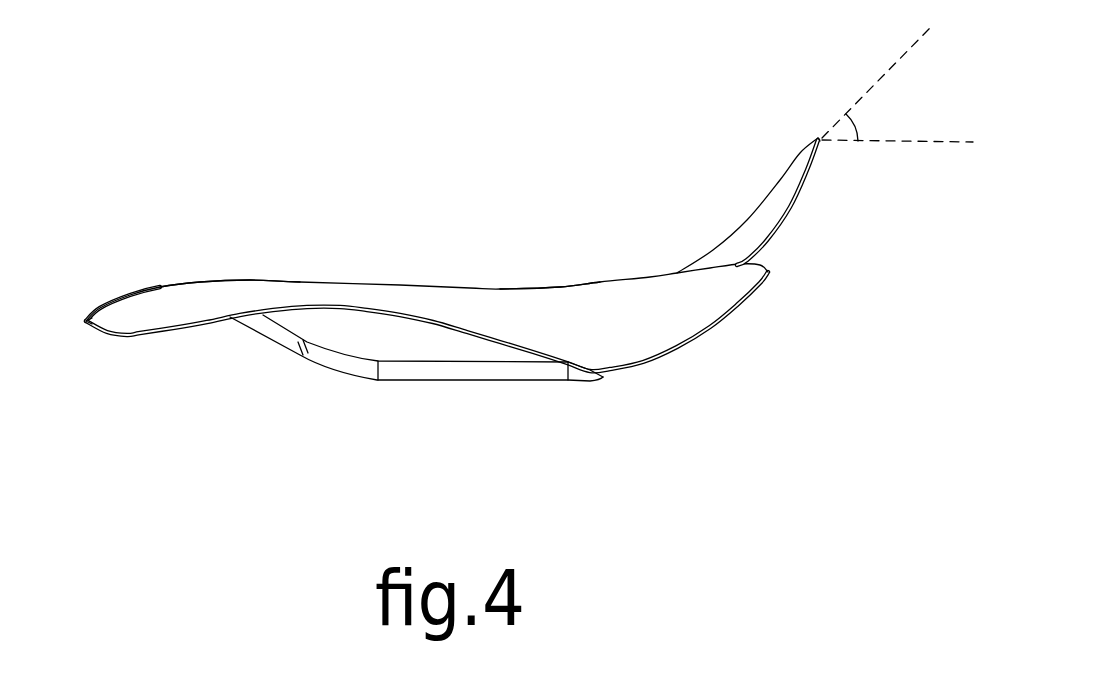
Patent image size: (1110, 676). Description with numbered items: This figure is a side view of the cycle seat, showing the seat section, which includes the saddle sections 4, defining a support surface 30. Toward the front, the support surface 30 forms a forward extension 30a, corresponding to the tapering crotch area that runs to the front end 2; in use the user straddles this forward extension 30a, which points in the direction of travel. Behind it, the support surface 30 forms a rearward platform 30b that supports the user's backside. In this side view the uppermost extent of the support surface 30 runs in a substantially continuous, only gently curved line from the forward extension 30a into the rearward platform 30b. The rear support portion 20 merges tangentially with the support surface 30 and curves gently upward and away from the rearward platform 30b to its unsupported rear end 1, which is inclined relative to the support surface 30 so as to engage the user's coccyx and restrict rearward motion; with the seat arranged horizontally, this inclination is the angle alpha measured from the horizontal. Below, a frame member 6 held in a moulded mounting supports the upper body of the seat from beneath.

The rear end 1 is at (889, 85).
The front end 2 is at (74, 321).
The saddle sections 4 is at (427, 321).
The frame members 6 is at (416, 372).
The rear support portion 20 is at (747, 205).
The support surface 30 is at (382, 285).
The forward extension 30a is at (230, 267).
The rearward platform 30b is at (555, 259).